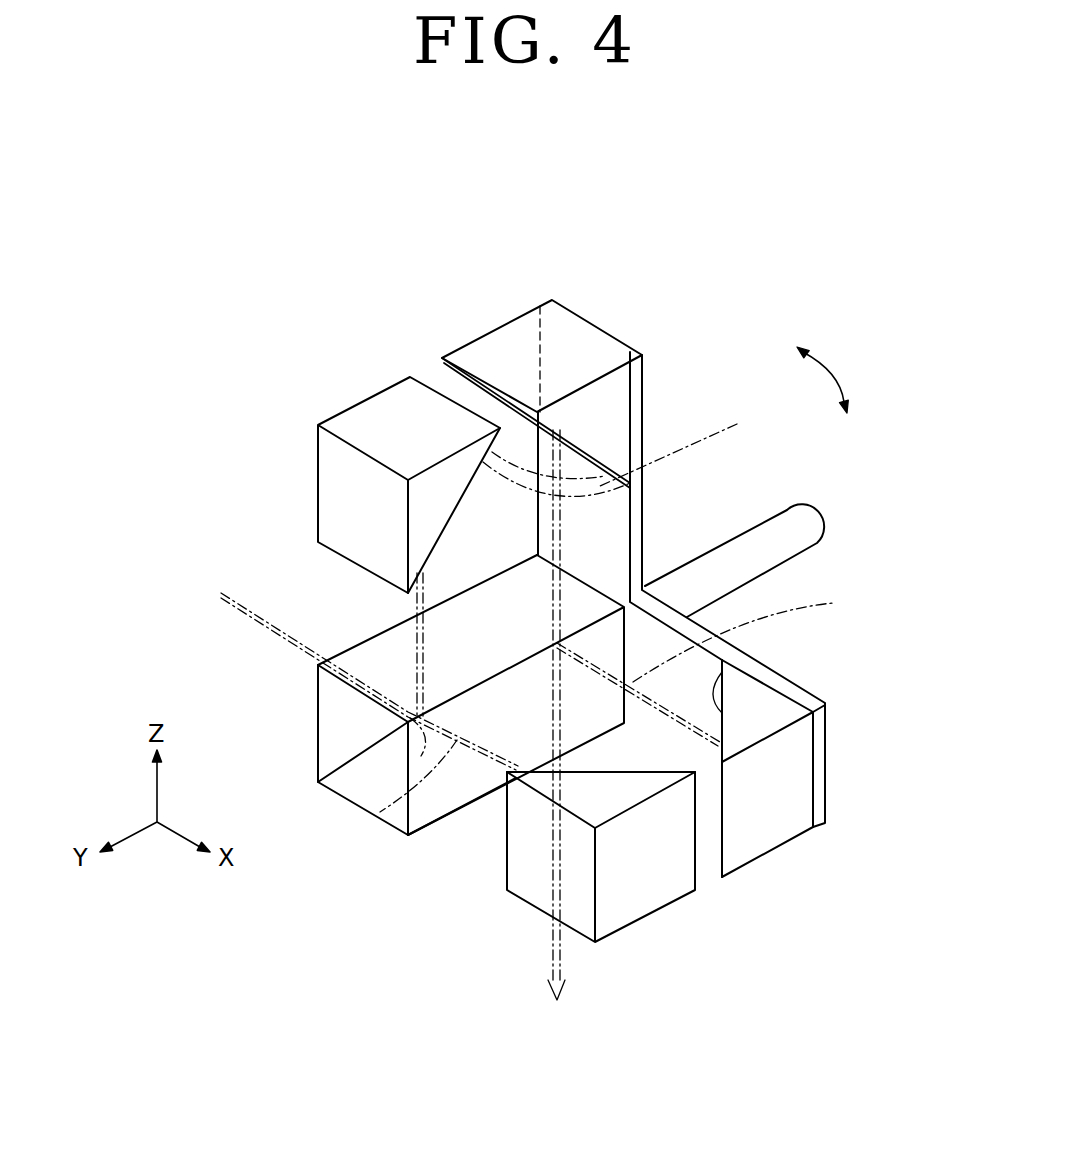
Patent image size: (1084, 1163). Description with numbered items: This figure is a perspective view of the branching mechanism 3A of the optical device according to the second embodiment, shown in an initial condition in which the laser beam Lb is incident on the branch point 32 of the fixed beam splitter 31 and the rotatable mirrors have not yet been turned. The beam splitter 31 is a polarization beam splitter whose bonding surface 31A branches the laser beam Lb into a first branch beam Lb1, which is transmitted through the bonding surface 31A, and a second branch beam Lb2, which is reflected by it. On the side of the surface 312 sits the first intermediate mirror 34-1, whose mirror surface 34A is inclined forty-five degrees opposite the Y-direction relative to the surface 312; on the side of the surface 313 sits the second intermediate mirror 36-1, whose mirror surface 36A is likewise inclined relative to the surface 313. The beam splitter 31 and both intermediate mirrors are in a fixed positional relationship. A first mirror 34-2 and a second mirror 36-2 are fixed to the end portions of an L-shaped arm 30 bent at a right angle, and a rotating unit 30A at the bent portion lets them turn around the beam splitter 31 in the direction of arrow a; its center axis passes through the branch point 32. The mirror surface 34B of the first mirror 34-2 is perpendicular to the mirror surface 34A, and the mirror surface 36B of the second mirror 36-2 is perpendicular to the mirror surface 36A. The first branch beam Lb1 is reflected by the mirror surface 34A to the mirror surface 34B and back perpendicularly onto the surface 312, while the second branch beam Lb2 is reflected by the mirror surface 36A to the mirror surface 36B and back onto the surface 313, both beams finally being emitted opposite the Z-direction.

The branching mechanism 3A is at (776, 263).
The second intermediate mirror 36-1 is at (368, 414).
The second mirror 36-2 is at (589, 339).
The mirror surface of second intermediate mirror 36A is at (470, 492).
The mirror surface of second mirror 36B is at (538, 445).
The L-shaped arm 30 is at (638, 527).
The rotating unit 30A is at (807, 533).
The beam splitter 31 is at (306, 702).
The surface 313 is at (355, 663).
The bonding surface 31A is at (353, 758).
The branch point 32 is at (356, 764).
The surface 312 is at (440, 807).
The first intermediate mirror 34-1 is at (543, 898).
The first mirror 34-2 is at (811, 762).
The mirror surface of first intermediate mirror 34A is at (607, 770).
The mirror surface of first mirror 34B is at (712, 692).
The laser beam Lb is at (258, 603).
The first branch beam Lb1 is at (345, 845).
The second branch beam Lb2 is at (427, 624).
The arrow a is at (847, 368).